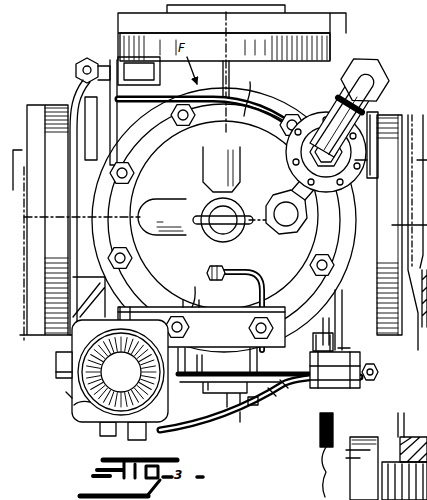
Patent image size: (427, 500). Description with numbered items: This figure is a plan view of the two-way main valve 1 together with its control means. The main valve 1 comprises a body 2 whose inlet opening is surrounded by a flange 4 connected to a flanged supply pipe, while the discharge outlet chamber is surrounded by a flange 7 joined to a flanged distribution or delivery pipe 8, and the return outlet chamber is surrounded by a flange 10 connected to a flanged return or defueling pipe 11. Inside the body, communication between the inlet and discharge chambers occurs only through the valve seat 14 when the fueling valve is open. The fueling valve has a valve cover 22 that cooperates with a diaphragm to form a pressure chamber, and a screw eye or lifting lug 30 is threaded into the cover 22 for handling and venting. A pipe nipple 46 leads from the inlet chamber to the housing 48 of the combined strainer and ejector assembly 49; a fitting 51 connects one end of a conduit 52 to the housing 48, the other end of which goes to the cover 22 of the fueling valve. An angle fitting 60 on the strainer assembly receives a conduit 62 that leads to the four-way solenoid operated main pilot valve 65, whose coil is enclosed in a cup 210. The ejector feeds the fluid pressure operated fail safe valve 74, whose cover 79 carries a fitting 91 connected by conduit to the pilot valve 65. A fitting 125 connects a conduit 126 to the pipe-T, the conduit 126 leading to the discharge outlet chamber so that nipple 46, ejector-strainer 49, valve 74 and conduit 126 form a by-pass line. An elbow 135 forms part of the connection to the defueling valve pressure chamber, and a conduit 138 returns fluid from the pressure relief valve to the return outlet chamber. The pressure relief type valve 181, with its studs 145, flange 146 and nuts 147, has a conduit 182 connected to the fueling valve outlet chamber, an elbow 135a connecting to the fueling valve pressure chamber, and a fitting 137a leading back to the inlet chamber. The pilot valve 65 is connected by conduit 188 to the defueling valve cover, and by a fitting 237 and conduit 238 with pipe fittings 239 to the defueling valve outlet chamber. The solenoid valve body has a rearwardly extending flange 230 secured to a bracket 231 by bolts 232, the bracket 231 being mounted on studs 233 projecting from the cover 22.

The two-way main valve 1 is at (297, 106).
The body 2 is at (357, 273).
The flange 4 is at (393, 115).
The flange 7 is at (48, 330).
The distribution or delivery pipe 8 is at (17, 234).
The flange 10 is at (332, 47).
The return or defueling pipe 11 is at (340, 20).
The valve seat 14 is at (409, 265).
The valve cover 22 is at (216, 22).
The screw eye or lifting lug 30 is at (193, 218).
The pipe nipple 46 is at (330, 324).
The housing 48 is at (348, 354).
The combined strainer and ejector assembly 49 is at (336, 388).
The fitting 51 is at (322, 380).
The conduit 52 is at (250, 272).
The angle fitting 60 is at (380, 370).
The conduit 62 is at (276, 394).
The four-way solenoid operated main pilot valve 65 is at (70, 398).
The fluid pressure operated fail safe valve 74 is at (208, 390).
The cover 79 is at (258, 404).
The fitting 91 is at (240, 422).
The fitting 125 is at (56, 364).
The conduit 126 is at (100, 340).
The elbow 135 is at (308, 494).
The elbow 135a is at (282, 203).
The fitting 137a is at (384, 77).
The conduit 138 is at (100, 153).
The studs 145 is at (418, 392).
The flange 146 is at (420, 430).
The nuts 147 is at (420, 408).
The pressure relief type valve 181 is at (336, 190).
The conduit 182 is at (92, 438).
The conduit 188 is at (260, 414).
The cup 210 is at (74, 405).
The rearwardly extending flange 230 is at (142, 308).
The bracket 231 is at (198, 298).
The bolts 232 is at (186, 300).
The studs 233 is at (192, 330).
The fitting 237 is at (58, 378).
The conduit 238 is at (70, 102).
The pipe fittings 239 is at (128, 62).